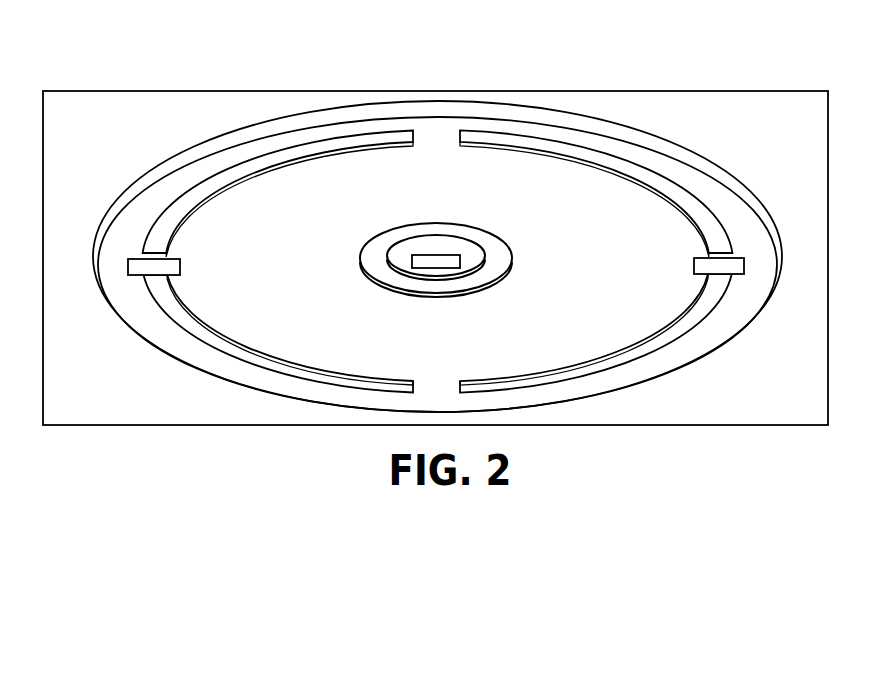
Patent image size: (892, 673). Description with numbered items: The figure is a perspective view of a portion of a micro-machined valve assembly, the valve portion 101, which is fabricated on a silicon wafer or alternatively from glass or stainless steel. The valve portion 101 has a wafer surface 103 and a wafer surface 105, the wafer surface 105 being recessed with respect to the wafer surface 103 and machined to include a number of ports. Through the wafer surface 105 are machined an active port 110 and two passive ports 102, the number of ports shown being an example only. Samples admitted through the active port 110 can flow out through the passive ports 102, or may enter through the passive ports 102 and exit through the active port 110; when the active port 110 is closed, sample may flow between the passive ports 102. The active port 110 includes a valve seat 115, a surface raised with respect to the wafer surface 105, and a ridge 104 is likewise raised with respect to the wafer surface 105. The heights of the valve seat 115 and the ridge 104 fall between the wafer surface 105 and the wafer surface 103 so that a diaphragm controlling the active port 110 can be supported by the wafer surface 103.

The valve portion 101 is at (117, 56).
The passive ports 102 is at (181, 262).
The wafer surface 103 is at (114, 135).
The ridge 104 is at (612, 163).
The wafer surface 105 is at (298, 137).
The active port 110 is at (427, 268).
The valve seat 115 is at (512, 252).